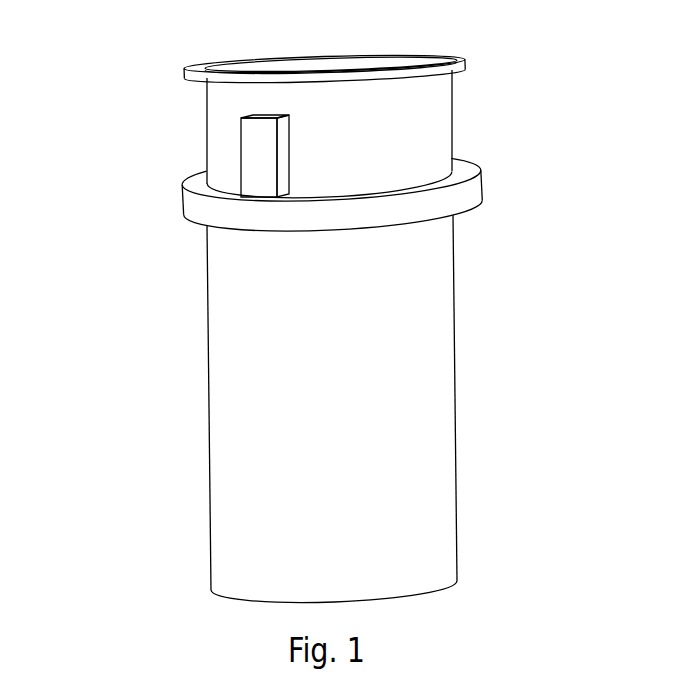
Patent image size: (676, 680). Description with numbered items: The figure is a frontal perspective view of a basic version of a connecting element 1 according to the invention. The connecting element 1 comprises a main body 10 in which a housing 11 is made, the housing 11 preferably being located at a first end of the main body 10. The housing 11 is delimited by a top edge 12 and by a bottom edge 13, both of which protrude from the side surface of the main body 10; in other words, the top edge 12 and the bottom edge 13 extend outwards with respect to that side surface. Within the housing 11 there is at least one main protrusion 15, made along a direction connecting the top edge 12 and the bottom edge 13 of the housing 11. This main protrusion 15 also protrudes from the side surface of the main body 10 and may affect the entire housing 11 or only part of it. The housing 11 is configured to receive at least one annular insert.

The connecting element 1 is at (110, 363).
The main body 10 is at (440, 367).
The housing 11 is at (437, 143).
The top edge 12 is at (458, 60).
The bottom edge 13 is at (192, 187).
The main protrusion 15 is at (245, 148).